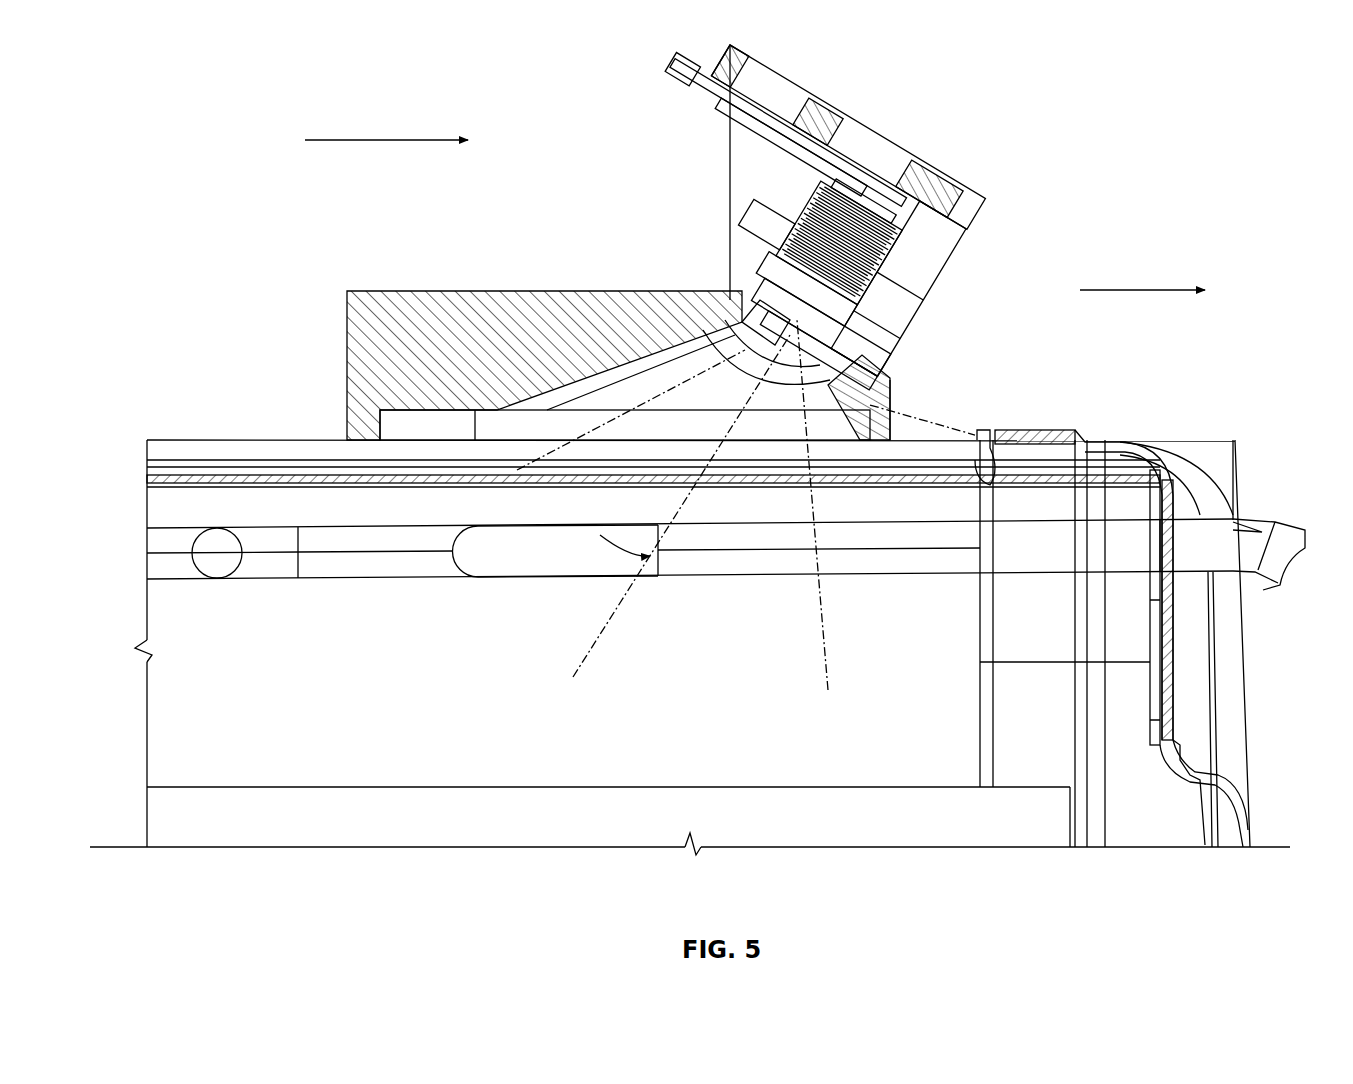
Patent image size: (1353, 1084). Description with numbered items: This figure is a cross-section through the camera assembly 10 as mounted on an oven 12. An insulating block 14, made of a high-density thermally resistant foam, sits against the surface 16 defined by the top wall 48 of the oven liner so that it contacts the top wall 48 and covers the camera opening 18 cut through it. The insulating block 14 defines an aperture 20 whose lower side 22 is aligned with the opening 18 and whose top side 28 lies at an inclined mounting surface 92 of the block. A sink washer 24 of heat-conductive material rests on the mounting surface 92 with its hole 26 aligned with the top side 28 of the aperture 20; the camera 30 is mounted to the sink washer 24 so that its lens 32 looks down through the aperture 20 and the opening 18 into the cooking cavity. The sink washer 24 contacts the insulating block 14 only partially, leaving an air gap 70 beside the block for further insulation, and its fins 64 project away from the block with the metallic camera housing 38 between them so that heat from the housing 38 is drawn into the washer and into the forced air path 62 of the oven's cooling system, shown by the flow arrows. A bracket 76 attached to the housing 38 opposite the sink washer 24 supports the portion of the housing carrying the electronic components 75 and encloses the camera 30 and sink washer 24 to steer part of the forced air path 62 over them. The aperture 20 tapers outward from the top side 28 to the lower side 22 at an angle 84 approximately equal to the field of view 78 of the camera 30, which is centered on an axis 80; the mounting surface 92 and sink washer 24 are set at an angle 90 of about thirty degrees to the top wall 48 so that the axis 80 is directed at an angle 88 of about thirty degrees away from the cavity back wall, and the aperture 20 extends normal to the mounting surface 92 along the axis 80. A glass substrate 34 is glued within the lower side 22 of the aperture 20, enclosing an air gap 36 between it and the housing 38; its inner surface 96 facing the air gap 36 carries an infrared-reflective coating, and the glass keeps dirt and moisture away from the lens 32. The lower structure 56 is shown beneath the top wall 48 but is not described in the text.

The camera assembly 10 is at (1128, 80).
The oven 12 is at (1195, 485).
The insulating block 14 is at (375, 355).
The surface 16 is at (228, 460).
The opening 18 is at (385, 487).
The aperture 20 is at (512, 430).
The lower side 22 is at (512, 450).
The sink washer 24 is at (740, 270).
The hole 26 is at (865, 345).
The top side 28 is at (725, 320).
The camera 30 is at (905, 310).
The lens 32 is at (765, 280).
The glass substrate 34 is at (852, 428).
The air gap 36 is at (620, 392).
The housing 38 is at (920, 268).
The top wall 48 is at (160, 490).
The rail 56 is at (170, 575).
The forced air path 62 is at (385, 135).
The fins 64 is at (910, 285).
The air gap 70 is at (740, 300).
The electronic components 75 is at (712, 108).
The bracket 76 is at (850, 132).
The field of view 78 is at (826, 640).
The axis 80 is at (630, 618).
The angle 84 is at (750, 330).
The angle 88 is at (1198, 688).
The angle 90 is at (980, 440).
The mounting surface 92 is at (877, 385).
The inner surface 96 is at (1170, 755).